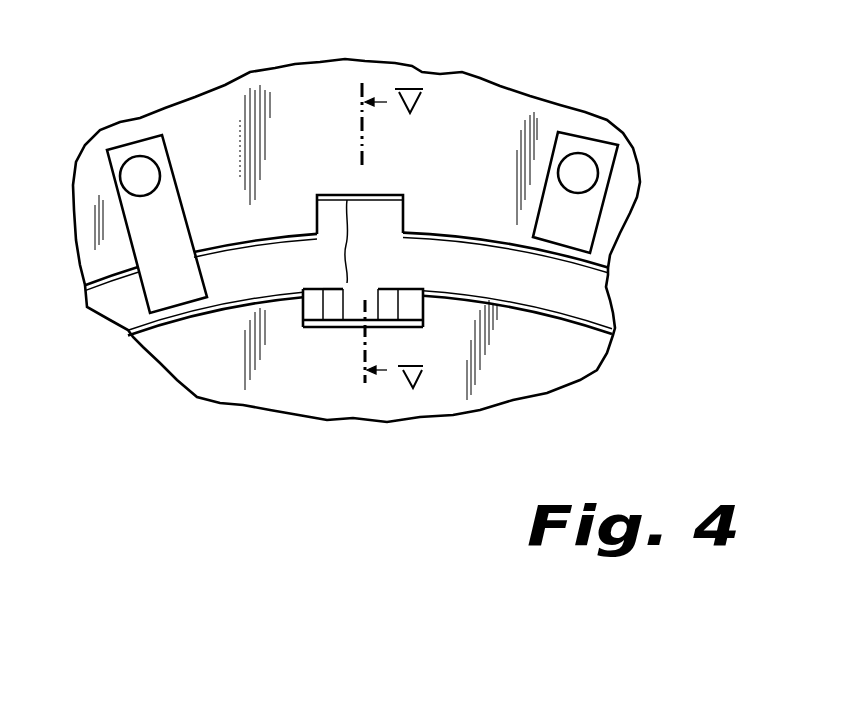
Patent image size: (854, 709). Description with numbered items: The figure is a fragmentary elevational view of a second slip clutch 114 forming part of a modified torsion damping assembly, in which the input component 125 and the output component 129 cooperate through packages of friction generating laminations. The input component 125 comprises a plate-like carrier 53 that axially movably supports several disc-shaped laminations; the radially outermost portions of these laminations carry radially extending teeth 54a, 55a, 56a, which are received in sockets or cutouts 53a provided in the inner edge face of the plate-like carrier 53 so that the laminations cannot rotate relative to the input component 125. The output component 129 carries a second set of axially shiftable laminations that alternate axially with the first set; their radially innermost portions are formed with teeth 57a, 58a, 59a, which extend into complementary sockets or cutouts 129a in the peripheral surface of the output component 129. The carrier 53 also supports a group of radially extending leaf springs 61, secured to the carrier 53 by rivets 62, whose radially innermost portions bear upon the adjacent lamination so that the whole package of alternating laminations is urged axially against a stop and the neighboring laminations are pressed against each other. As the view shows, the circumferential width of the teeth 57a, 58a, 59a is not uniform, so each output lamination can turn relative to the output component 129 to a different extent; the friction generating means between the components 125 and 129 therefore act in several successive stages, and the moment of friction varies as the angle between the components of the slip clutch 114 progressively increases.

The plate-like carrier 53 is at (497, 127).
The sockets or cutouts 53a is at (330, 193).
The tooth 54a is at (423, 210).
The tooth 55a is at (423, 210).
The tooth 56a is at (378, 213).
The tooth 57a is at (353, 310).
The tooth 58a is at (335, 310).
The tooth 59a is at (312, 310).
The leaf springs 61 is at (157, 140).
The rivets 62 is at (133, 175).
The slip clutch 114 is at (647, 118).
The input component 125 is at (436, 97).
The output component 129 is at (198, 362).
The sockets or cutouts 129a is at (413, 327).